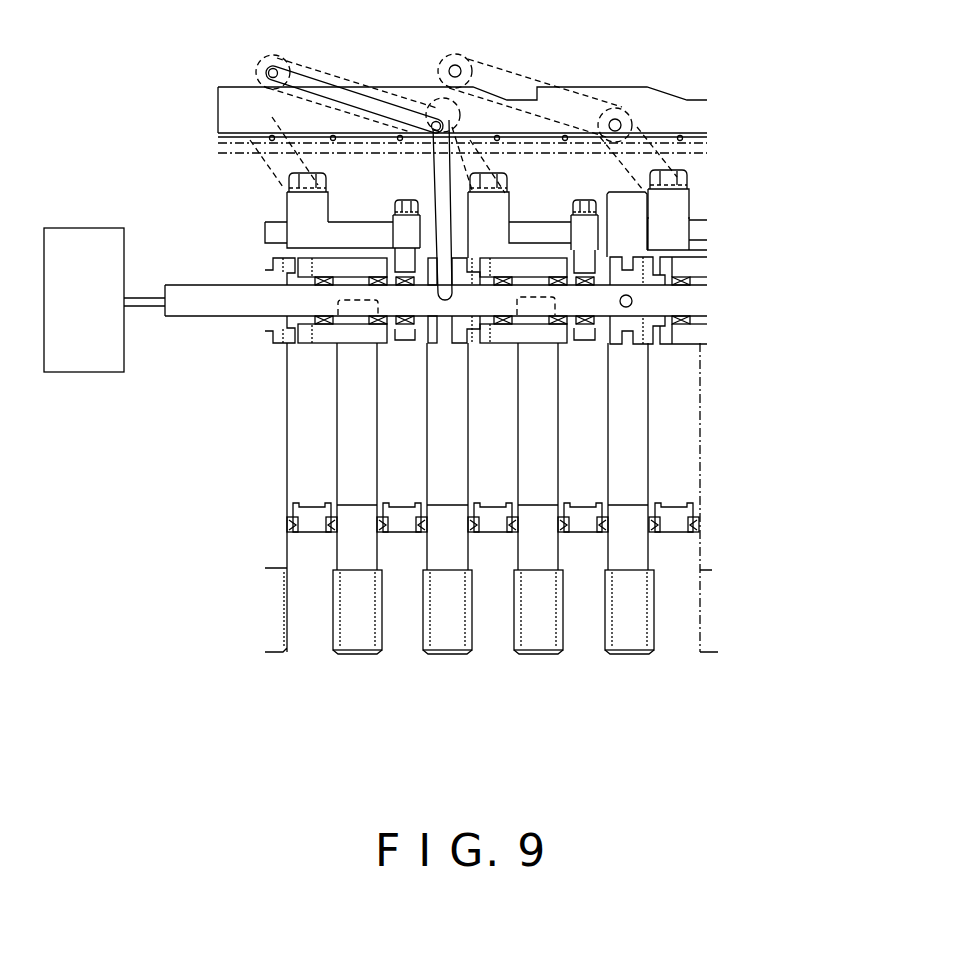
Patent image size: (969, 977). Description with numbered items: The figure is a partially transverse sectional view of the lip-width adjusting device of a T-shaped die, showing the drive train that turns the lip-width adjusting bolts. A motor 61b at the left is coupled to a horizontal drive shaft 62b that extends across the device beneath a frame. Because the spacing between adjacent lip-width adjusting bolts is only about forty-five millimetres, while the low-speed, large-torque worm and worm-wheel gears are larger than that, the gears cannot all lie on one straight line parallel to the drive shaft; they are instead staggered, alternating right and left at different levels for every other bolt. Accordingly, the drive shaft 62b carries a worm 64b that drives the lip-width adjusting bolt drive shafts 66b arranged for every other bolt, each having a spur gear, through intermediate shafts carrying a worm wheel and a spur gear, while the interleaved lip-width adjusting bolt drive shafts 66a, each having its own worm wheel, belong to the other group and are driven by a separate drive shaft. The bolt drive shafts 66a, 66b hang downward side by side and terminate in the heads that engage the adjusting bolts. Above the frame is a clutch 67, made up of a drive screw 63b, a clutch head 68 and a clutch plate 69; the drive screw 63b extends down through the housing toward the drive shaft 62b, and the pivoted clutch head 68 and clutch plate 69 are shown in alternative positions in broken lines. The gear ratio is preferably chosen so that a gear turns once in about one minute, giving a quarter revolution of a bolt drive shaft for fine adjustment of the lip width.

The motor 61b is at (92, 360).
The drive shaft 62b is at (203, 307).
The drive screw 63b is at (437, 325).
The worm 64b is at (515, 330).
The lip-width adjusting bolt drive shaft 66a is at (453, 638).
The lip-width adjusting bolt drive shaft 66b is at (358, 638).
The clutch 67 is at (333, 88).
The clutch head 68 is at (270, 55).
The clutch plate 69 is at (410, 83).